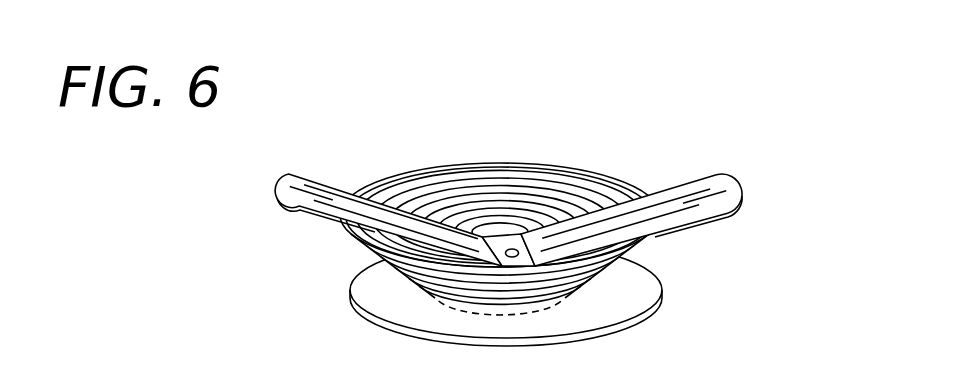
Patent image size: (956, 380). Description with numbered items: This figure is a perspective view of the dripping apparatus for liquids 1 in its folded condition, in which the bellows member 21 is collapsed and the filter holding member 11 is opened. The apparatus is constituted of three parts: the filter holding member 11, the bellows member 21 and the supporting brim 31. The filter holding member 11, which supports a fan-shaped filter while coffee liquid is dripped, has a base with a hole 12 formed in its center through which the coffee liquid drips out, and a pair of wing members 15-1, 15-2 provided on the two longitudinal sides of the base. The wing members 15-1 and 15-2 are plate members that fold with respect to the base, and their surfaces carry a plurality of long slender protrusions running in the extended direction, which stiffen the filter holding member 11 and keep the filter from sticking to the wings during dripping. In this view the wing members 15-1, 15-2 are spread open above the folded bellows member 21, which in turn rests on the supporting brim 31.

The dripping apparatus for liquids 1 is at (507, 213).
The filter holding member 11 is at (507, 185).
The hole 12 is at (512, 249).
The wing member 15-1 is at (287, 197).
The wing member 15-2 is at (700, 180).
The bellows member 21 is at (393, 272).
The supporting brim 31 is at (645, 318).